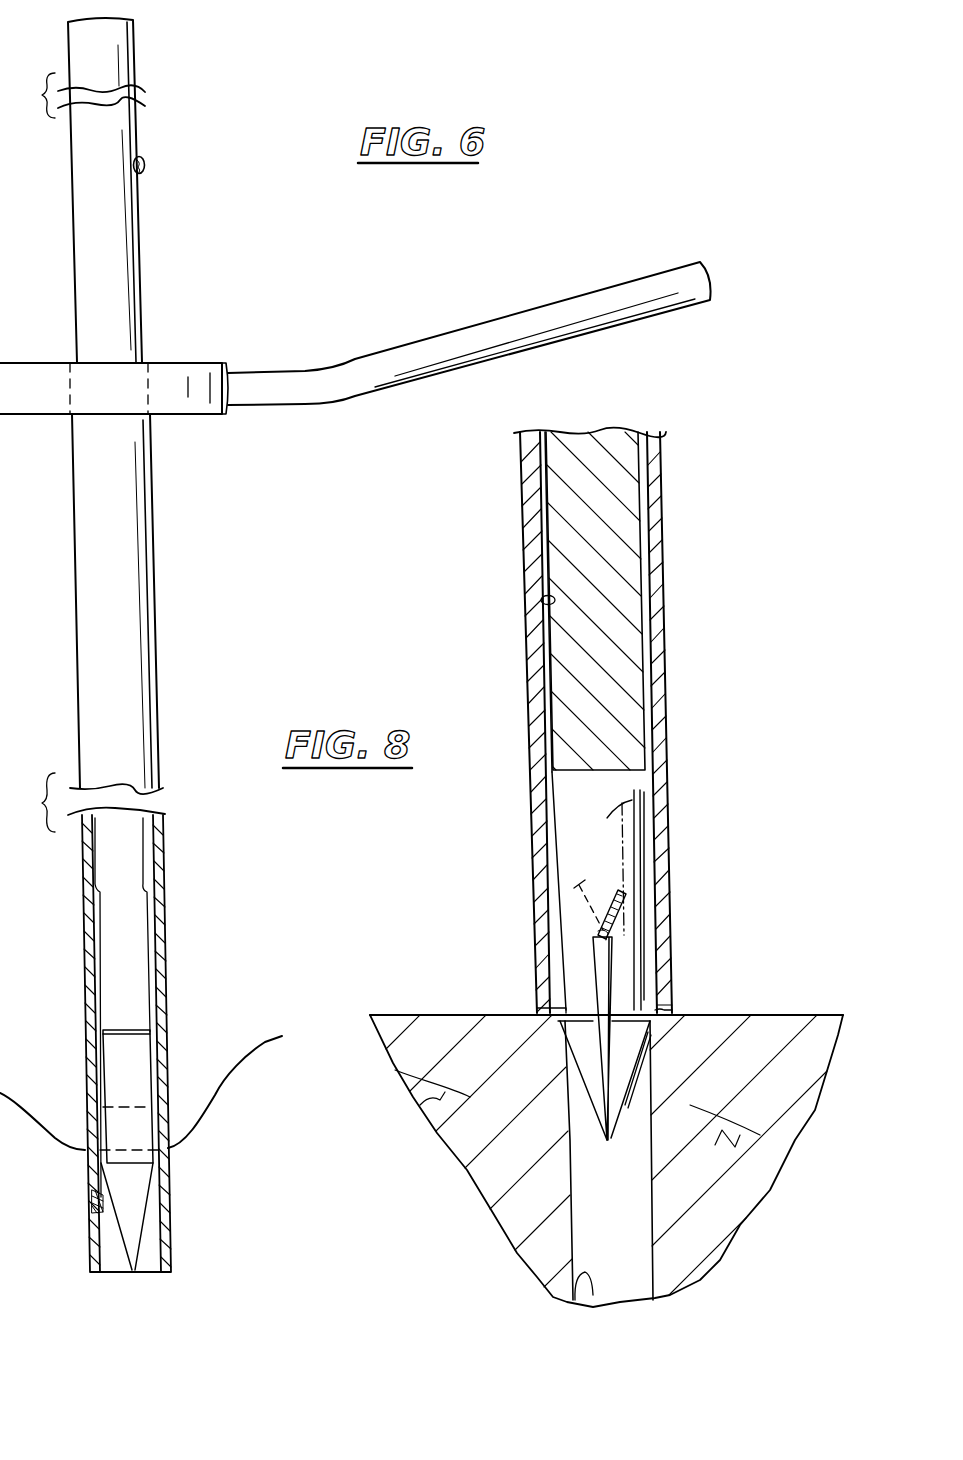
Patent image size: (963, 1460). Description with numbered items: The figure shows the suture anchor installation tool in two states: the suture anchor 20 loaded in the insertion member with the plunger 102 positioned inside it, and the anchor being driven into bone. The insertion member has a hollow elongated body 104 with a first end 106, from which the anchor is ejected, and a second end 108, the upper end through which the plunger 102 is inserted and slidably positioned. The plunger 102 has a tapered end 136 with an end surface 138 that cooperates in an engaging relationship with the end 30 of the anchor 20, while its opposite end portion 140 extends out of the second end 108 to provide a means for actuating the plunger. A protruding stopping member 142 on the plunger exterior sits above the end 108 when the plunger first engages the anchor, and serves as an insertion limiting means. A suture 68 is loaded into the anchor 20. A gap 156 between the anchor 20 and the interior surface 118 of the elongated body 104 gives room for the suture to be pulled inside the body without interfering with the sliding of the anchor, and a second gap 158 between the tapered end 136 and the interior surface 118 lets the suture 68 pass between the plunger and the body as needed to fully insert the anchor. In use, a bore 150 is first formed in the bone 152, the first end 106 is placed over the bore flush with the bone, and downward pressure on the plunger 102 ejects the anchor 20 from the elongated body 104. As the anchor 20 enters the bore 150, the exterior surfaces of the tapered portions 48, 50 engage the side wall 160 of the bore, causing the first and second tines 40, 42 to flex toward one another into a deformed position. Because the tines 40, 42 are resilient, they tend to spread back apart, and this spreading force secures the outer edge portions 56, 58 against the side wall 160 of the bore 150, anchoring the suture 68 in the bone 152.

In FIG. 6, the suture anchor 20 is at (138, 1180).
In FIG. 8, the suture anchor 20 is at (607, 818).
In FIG. 6, the end of the anchor 30 is at (118, 1033).
In FIG. 8, the first flexible tine 40 is at (576, 983).
In FIG. 8, the second flexible tine 42 is at (628, 970).
In FIG. 8, the tapered portion 48 is at (592, 1073).
In FIG. 8, the tapered portion 50 is at (642, 1083).
In FIG. 8, the outer edge portion 56 is at (562, 1010).
In FIG. 8, the outer edge portion 58 is at (654, 1008).
In FIG. 6, the suture 68 is at (243, 1070).
In FIG. 8, the suture 68 is at (628, 910).
In FIG. 6, the plunger 102 is at (200, 238).
In FIG. 8, the plunger 102 is at (627, 537).
In FIG. 6, the elongated body 104 is at (145, 773).
In FIG. 8, the elongated body 104 is at (666, 620).
In FIG. 8, the first end 106 is at (665, 995).
In FIG. 6, the second end 108 is at (120, 383).
In FIG. 8, the interior surface 118 is at (541, 599).
In FIG. 8, the tapered end 136 is at (598, 718).
In FIG. 6, the end surface 138 is at (147, 1041).
In FIG. 6, the end portion 140 is at (113, 41).
In FIG. 6, the protruding stopping member 142 is at (145, 163).
In FIG. 8, the bore 150 is at (638, 1216).
In FIG. 8, the bone 152 is at (498, 1177).
In FIG. 8, the gap 156 is at (549, 833).
In FIG. 8, the second gap 158 is at (547, 677).
In FIG. 8, the side wall 160 is at (580, 1273).